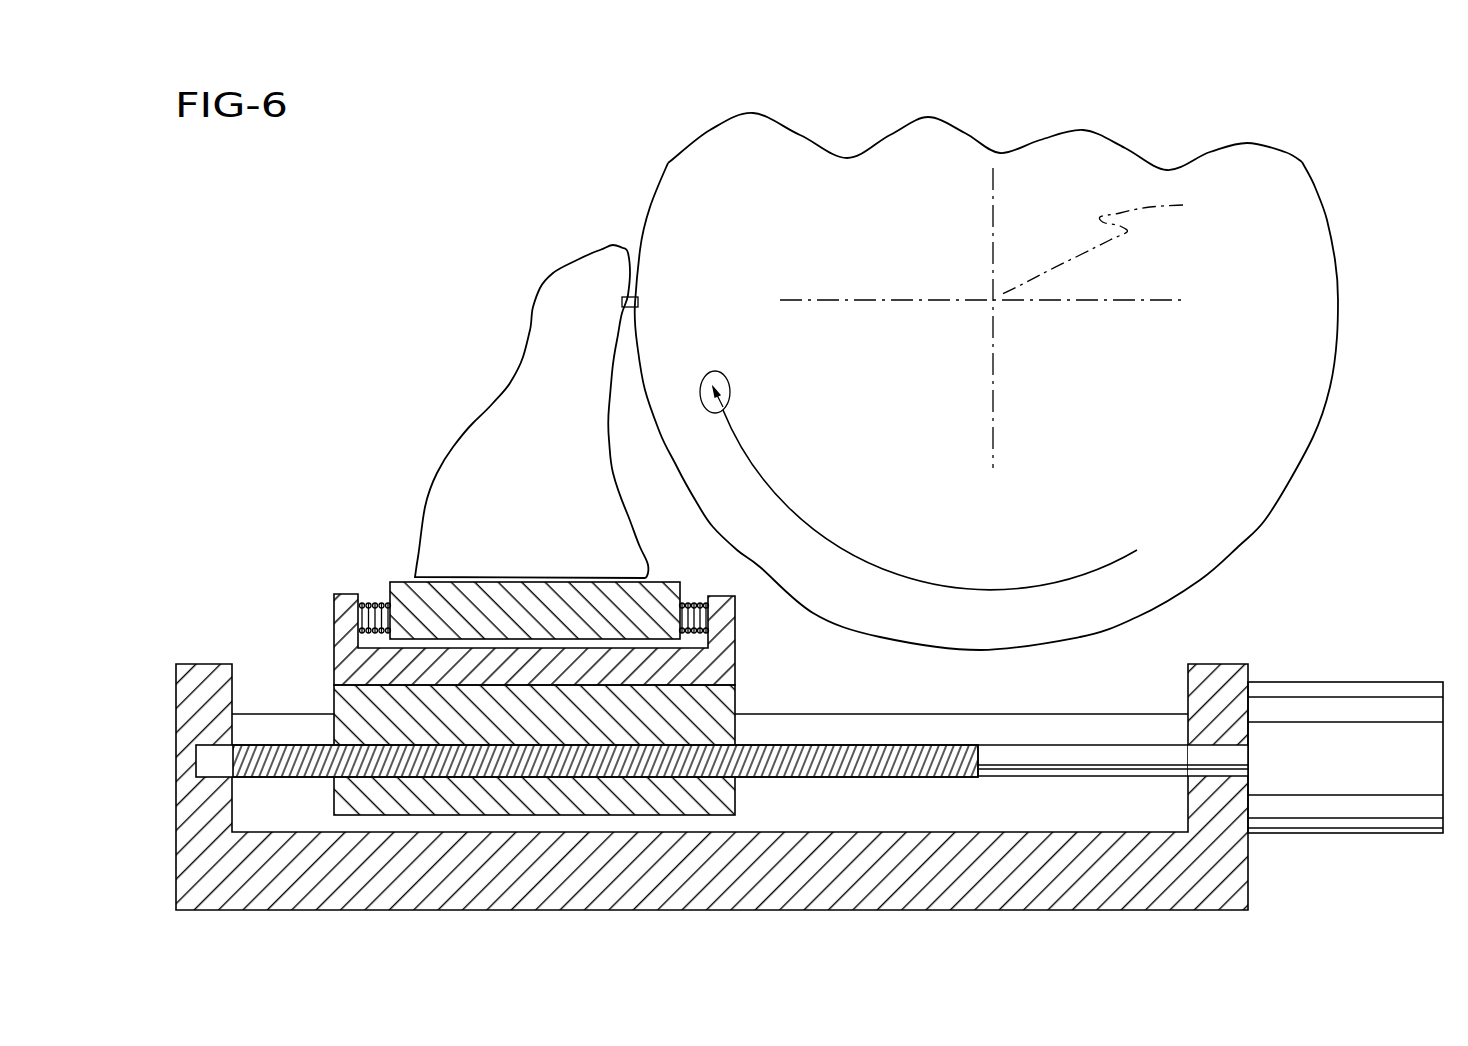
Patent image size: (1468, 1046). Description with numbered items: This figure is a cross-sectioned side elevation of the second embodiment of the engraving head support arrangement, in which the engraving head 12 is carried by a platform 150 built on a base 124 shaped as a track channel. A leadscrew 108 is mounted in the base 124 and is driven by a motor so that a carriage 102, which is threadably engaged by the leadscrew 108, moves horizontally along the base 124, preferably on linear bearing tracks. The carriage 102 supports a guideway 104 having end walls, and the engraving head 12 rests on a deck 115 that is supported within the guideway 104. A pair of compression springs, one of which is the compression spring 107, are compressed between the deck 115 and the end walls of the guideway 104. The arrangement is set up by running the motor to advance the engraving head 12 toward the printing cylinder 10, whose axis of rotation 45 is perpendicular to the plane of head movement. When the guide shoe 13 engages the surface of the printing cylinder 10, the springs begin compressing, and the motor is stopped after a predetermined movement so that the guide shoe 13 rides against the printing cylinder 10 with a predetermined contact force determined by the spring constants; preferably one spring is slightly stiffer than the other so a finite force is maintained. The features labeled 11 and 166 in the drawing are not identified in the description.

The printing cylinder 10 is at (1153, 392).
The arcuate path 11 is at (790, 505).
The engraving head 12 is at (492, 407).
The guide shoe 13 is at (638, 243).
The axis of rotation 45 is at (1113, 242).
The carriage 102 is at (735, 702).
The guideway 104 is at (735, 645).
The compression spring 107 is at (702, 596).
The leadscrew 108 is at (1130, 753).
The deck 115 is at (372, 597).
The base 124 is at (1248, 872).
The platform 150 is at (800, 654).
The mounting plate 166 is at (398, 580).